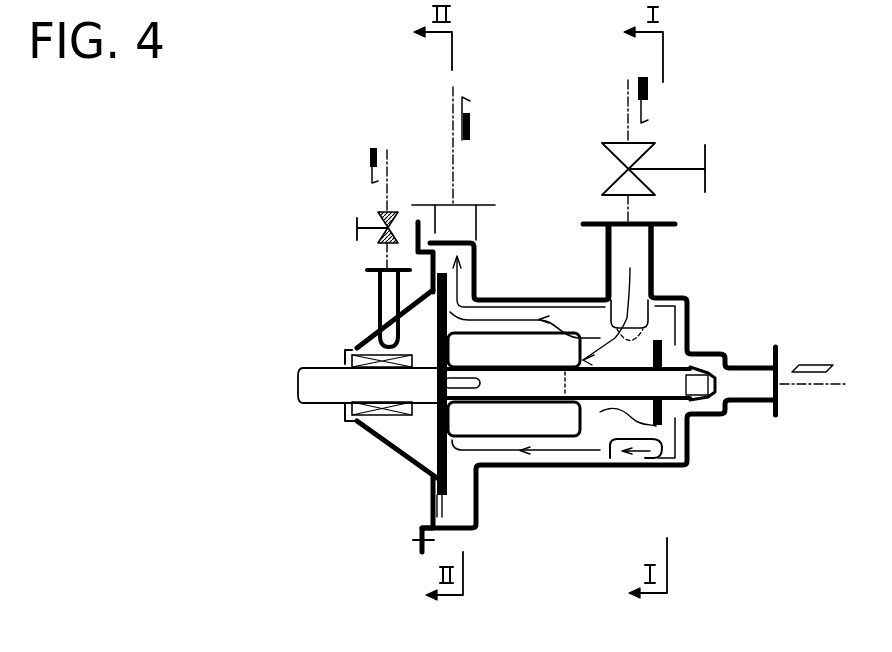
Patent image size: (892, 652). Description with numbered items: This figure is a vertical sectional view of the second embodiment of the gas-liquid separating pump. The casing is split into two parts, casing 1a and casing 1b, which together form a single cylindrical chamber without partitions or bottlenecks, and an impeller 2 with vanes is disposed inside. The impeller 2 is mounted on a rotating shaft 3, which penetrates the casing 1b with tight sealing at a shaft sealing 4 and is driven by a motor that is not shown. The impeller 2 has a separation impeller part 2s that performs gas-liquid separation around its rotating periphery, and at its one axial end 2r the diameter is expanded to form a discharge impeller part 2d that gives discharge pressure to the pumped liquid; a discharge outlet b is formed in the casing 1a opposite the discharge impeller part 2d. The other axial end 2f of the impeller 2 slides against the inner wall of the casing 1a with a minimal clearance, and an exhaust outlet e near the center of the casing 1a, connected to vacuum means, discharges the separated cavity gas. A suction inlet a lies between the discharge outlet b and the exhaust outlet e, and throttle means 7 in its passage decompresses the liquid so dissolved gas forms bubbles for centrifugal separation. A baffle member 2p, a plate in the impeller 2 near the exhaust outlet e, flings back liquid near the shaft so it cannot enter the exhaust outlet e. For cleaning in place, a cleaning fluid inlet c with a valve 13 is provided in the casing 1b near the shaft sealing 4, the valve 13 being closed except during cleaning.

The shaft sealing 4 is at (351, 350).
The cleaning fluid inlet c is at (386, 302).
The valve 13 is at (372, 228).
The discharge outlet b is at (462, 220).
The throttle means 7 is at (672, 167).
The suction inlet a is at (638, 252).
The baffle member 2p is at (660, 340).
The exhaust outlet e is at (750, 375).
The rotating shaft 3 is at (355, 422).
The casing 1b is at (390, 384).
The one axial end of the impeller 2r is at (437, 448).
The discharge impeller part 2d is at (458, 482).
The impeller 2 is at (475, 448).
The separation impeller part 2s is at (582, 450).
The casing 1a is at (661, 447).
The other axial end of the impeller 2f is at (690, 463).